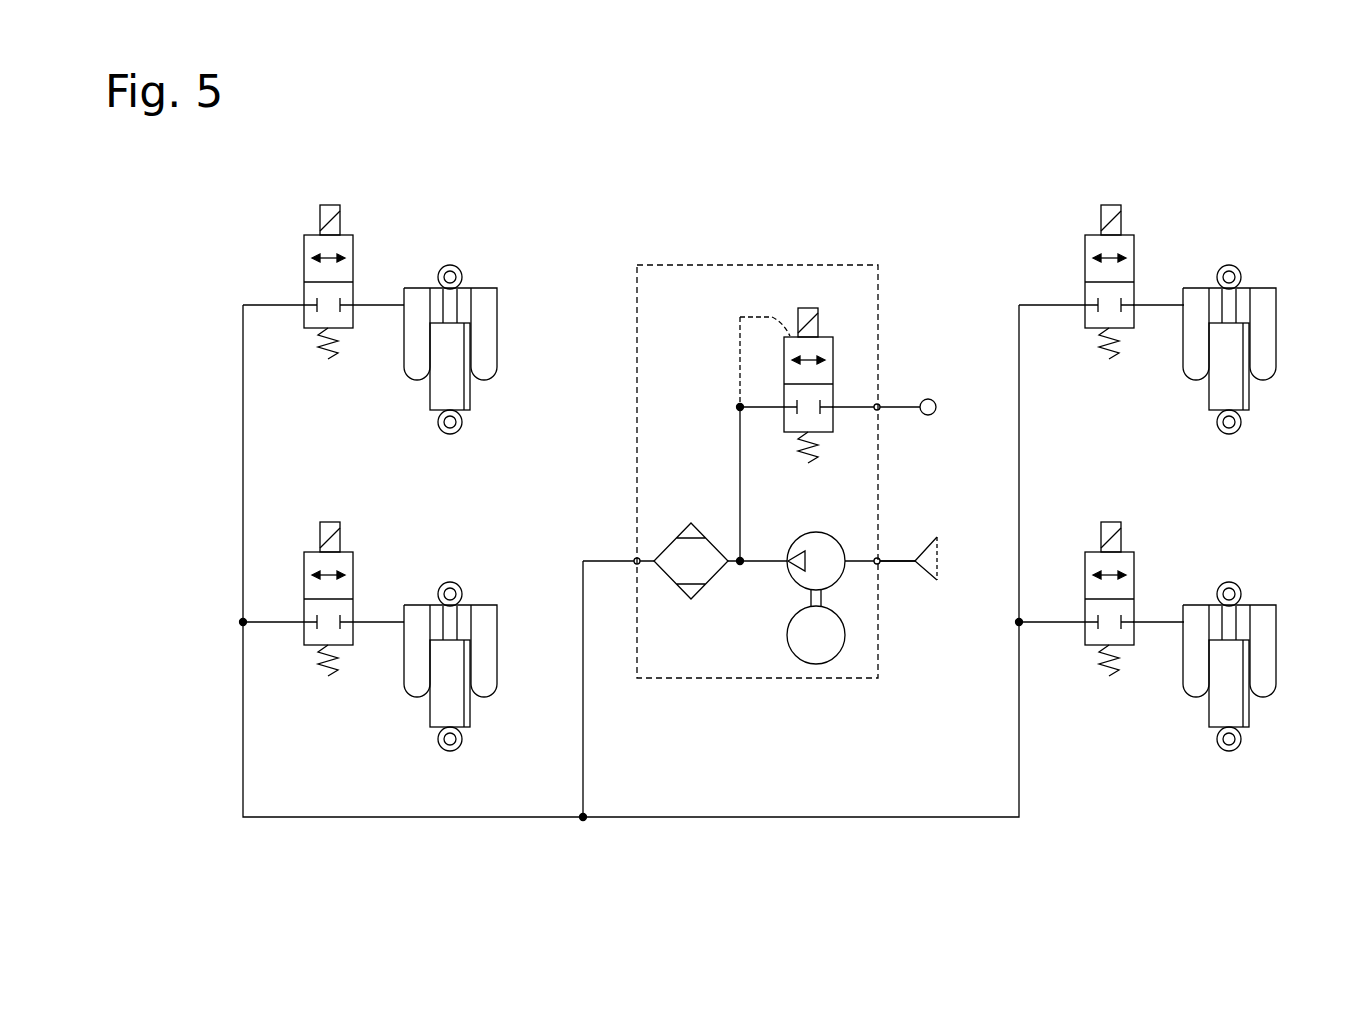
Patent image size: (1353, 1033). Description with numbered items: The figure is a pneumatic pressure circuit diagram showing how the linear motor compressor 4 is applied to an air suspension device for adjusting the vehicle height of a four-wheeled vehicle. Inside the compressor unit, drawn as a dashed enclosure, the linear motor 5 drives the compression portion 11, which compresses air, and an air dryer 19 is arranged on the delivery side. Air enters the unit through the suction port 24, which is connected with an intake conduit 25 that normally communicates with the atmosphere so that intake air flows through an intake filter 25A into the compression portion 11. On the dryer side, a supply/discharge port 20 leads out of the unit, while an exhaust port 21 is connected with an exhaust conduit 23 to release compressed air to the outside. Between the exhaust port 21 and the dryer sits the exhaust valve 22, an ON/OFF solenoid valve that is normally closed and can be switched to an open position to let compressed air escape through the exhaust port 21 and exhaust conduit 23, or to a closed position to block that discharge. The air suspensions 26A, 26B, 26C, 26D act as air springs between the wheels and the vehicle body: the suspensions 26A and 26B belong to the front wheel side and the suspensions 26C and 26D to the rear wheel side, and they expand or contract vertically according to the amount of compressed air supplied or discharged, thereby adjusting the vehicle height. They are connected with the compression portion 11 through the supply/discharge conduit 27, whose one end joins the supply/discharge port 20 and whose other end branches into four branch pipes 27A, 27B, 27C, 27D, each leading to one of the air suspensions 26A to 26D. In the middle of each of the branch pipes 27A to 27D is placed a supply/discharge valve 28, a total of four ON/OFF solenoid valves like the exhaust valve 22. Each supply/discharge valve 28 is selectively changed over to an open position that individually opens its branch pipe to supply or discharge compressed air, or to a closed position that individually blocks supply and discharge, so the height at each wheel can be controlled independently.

The linear motor compressor 4 is at (768, 263).
The linear motor 5 is at (785, 632).
The compression portion 11 is at (825, 532).
The air dryer 19 is at (691, 522).
The supply/discharge port 20 is at (633, 565).
The exhaust port 21 is at (880, 410).
The exhaust valve 22 is at (827, 335).
The exhaust conduit 23 is at (897, 405).
The suction port 24 is at (880, 558).
The intake conduit 25 is at (892, 565).
The intake filter 25A is at (928, 575).
The air suspension 26A is at (457, 645).
The air suspension 26B is at (483, 287).
The air suspension 26C is at (1241, 651).
The air suspension 26D is at (1237, 333).
The supply/discharge conduit 27 is at (583, 740).
The branch pipe 27A is at (261, 627).
The branch pipe 27B is at (260, 302).
The branch pipe 27C is at (1053, 627).
The branch pipe 27D is at (1047, 302).
The supply/discharge valve 28 is at (345, 236).